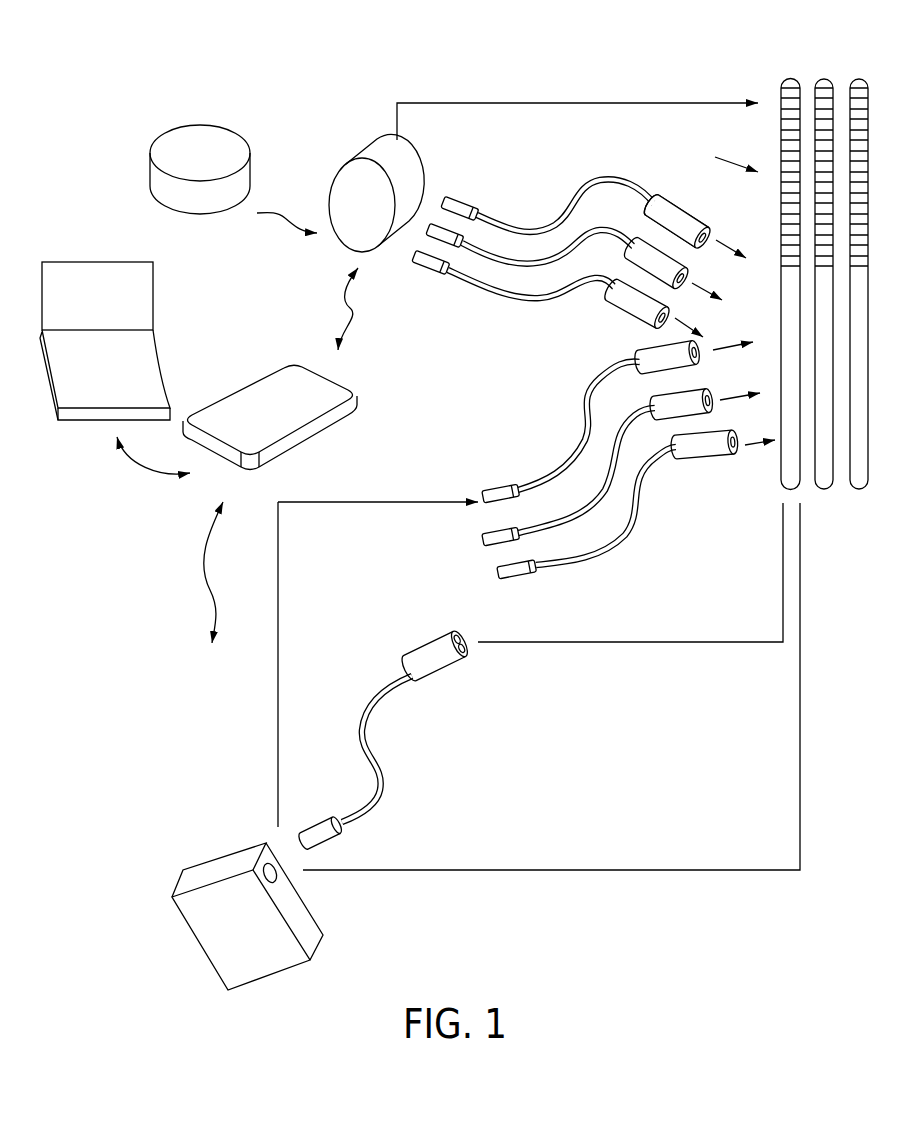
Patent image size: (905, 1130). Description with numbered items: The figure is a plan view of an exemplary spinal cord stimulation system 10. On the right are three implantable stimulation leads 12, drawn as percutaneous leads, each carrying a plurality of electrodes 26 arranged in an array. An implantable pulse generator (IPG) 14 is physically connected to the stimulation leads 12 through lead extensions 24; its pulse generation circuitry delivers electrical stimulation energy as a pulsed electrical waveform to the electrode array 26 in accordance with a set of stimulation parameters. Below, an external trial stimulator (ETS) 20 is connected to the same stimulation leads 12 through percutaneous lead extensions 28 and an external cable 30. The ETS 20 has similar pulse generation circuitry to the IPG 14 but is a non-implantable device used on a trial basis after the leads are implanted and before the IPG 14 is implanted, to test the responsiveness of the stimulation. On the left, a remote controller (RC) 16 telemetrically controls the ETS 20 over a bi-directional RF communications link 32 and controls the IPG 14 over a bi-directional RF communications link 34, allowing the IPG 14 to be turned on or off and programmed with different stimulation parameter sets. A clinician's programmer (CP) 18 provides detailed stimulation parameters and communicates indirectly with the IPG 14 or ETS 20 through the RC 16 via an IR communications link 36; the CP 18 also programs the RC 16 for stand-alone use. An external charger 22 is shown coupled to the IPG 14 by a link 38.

The spinal cord stimulation (SCS) system 10 is at (548, 55).
The implantable stimulation leads 12 is at (748, 256).
The implantable pulse generator (IPG) 14 is at (358, 156).
The remote controller (RC) 16 is at (283, 380).
The clinician's programmer (CP) 18 is at (82, 275).
The external trial stimulator (ETS) 20 is at (220, 868).
The external charger 22 is at (200, 130).
The lead extensions 24 is at (600, 277).
The electrodes 26 is at (786, 112).
The percutaneous lead extensions 28 is at (568, 512).
The external cable 30 is at (380, 683).
The bi-directional RF communications link 32 is at (215, 617).
The bi-directional RF communications link 34 is at (357, 323).
The IR communications link 36 is at (142, 468).
The inductive link 38 is at (257, 213).